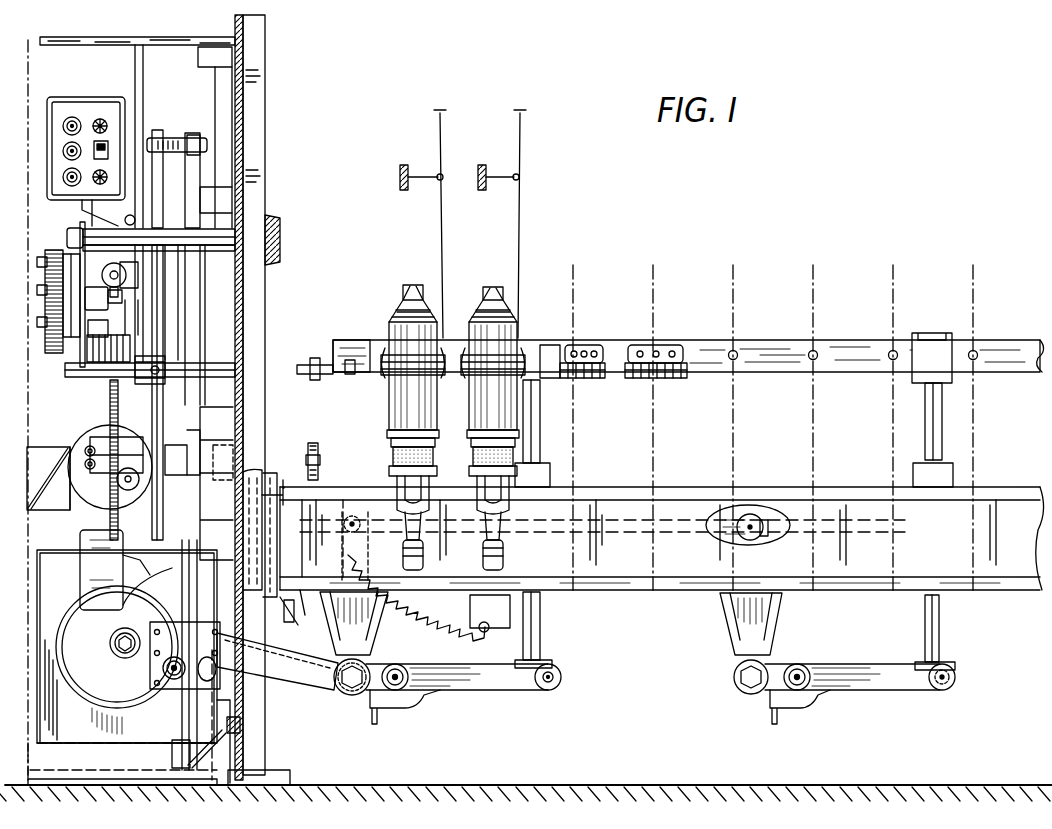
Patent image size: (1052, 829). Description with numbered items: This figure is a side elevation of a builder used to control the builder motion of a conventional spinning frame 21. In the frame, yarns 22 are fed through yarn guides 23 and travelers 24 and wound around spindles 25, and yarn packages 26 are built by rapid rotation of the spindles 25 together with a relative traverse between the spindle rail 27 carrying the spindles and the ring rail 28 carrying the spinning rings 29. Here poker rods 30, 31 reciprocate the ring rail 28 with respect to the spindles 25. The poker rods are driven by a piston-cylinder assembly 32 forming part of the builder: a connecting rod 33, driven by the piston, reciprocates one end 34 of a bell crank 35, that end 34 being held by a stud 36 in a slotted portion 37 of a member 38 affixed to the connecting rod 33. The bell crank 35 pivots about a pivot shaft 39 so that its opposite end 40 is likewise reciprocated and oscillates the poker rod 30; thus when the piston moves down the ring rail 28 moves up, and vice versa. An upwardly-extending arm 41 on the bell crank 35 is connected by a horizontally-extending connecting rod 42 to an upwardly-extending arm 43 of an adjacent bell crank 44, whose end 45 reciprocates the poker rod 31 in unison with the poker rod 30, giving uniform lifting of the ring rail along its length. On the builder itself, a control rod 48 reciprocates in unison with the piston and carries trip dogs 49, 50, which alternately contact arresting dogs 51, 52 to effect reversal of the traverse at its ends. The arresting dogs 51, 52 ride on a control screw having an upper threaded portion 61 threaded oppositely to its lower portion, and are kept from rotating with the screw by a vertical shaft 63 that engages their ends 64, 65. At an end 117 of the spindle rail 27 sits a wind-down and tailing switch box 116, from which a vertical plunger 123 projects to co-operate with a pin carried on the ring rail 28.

The spinning frame 21 is at (558, 255).
The yarns 22 is at (513, 127).
The yarn guides 23 is at (443, 180).
The travelers 24 is at (440, 355).
The spindles 25 is at (418, 296).
The yarn packages 26 is at (478, 300).
The spindle rail 27 is at (365, 494).
The ring rail 28 is at (352, 346).
The spinning rings 29 is at (386, 386).
The poker rod 30 is at (535, 447).
The poker rod 31 is at (936, 448).
The piston-cylinder assembly 32 is at (230, 316).
The connecting rod 33 is at (197, 550).
The end of bell crank 34 is at (163, 668).
The bell crank 35 is at (340, 714).
The stud 36 is at (168, 674).
The slotted portion 37 is at (205, 675).
The member 38 is at (222, 680).
The pivot shaft 39 is at (368, 680).
The end of bell crank 40 is at (487, 680).
The upwardly-extending arm 41 is at (357, 547).
The horizontally-extending connecting rod 42 is at (585, 525).
The upwardly-extending arm 43 is at (745, 535).
The bell crank 44 is at (753, 705).
The end of bell crank 45 is at (937, 690).
The control rod 48 is at (158, 430).
The trip dog 49 is at (168, 360).
The trip dog 50 is at (150, 582).
The arresting dog 51 is at (138, 458).
The arresting dog 52 is at (110, 473).
The upper threaded portion 61 is at (118, 424).
The vertical shaft 63 is at (88, 512).
The end of arresting dog 64 is at (86, 448).
The end of arresting dog 65 is at (85, 464).
The wind-down and tailing switch box 116 is at (330, 480).
The end of spindle rail 117 is at (310, 595).
The vertical plunger 123 is at (307, 460).